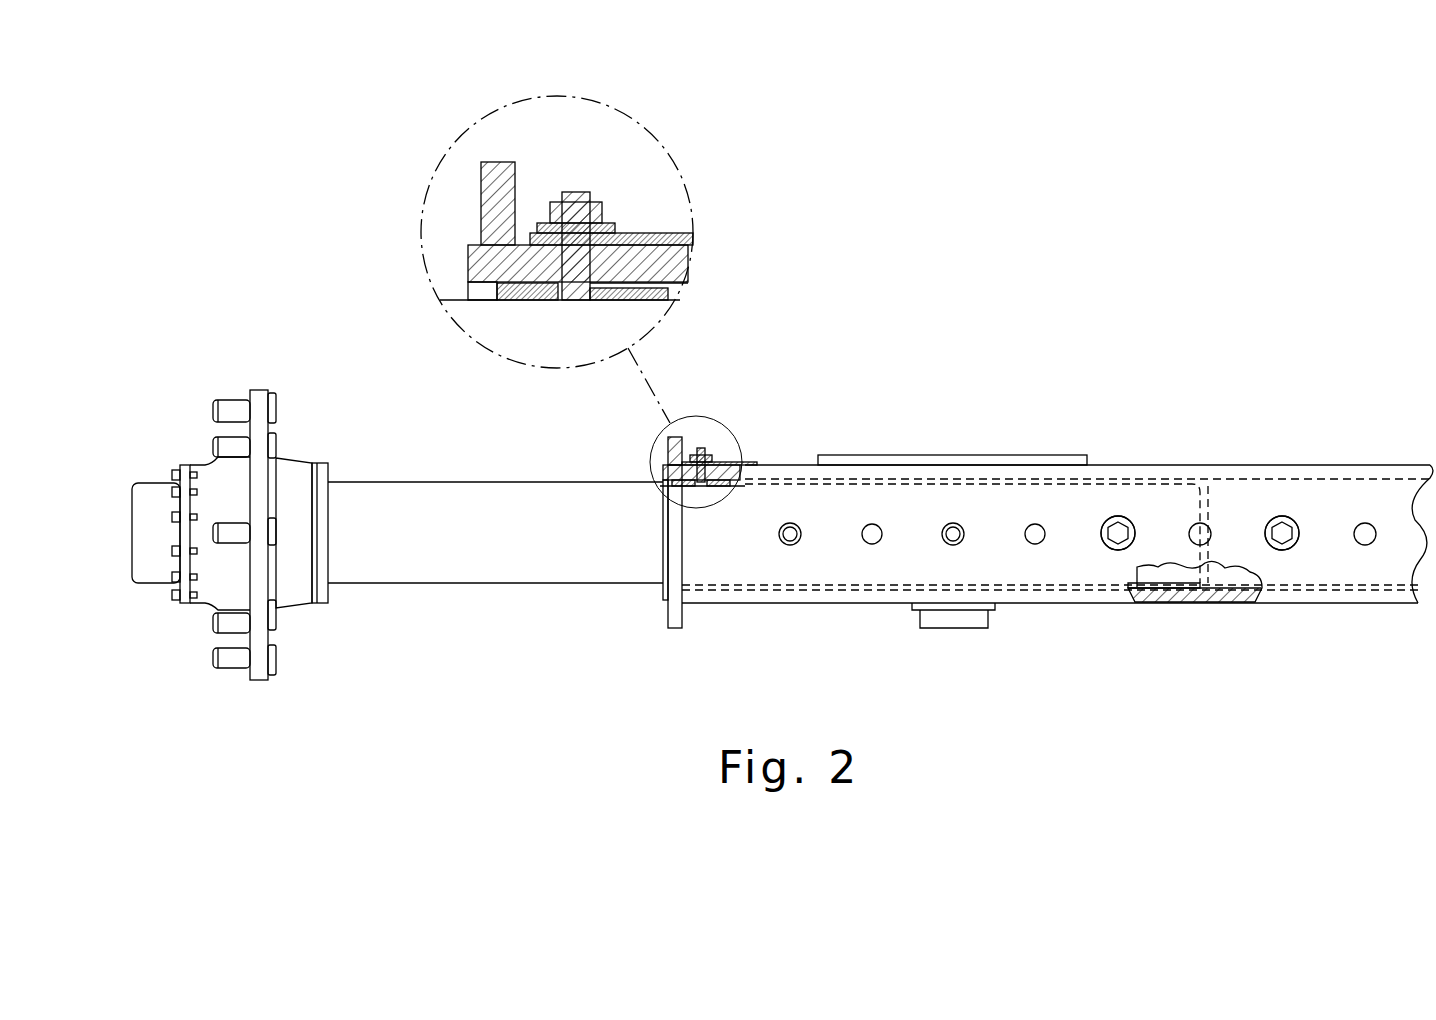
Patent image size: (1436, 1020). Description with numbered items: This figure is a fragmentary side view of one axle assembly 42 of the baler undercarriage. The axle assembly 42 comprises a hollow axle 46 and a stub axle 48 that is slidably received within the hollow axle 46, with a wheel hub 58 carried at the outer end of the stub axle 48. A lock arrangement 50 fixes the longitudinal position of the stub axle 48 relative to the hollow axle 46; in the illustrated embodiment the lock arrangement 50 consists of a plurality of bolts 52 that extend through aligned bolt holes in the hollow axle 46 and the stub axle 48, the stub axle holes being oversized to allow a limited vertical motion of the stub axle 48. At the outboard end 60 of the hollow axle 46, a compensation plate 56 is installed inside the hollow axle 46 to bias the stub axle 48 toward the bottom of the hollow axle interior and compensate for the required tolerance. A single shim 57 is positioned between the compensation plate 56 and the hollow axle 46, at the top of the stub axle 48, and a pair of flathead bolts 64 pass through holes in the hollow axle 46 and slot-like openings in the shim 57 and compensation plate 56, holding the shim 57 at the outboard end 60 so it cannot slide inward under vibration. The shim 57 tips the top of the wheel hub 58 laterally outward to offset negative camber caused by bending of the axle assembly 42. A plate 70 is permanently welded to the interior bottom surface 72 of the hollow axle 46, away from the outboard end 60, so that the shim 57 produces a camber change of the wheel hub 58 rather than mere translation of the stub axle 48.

The axle assembly 42 is at (902, 397).
The hollow axle 46 is at (1300, 465).
The stub axle 48 is at (437, 482).
The lock arrangement 50 is at (1270, 508).
The bolts 52 is at (1105, 549).
The compensation plate 56 is at (680, 493).
The shim 57 is at (663, 465).
The wheel hub 58 is at (293, 433).
The outboard end 60 is at (697, 602).
The bolts 64 is at (701, 450).
The plate 70 is at (1177, 589).
The interior bottom surface 72 is at (1233, 594).